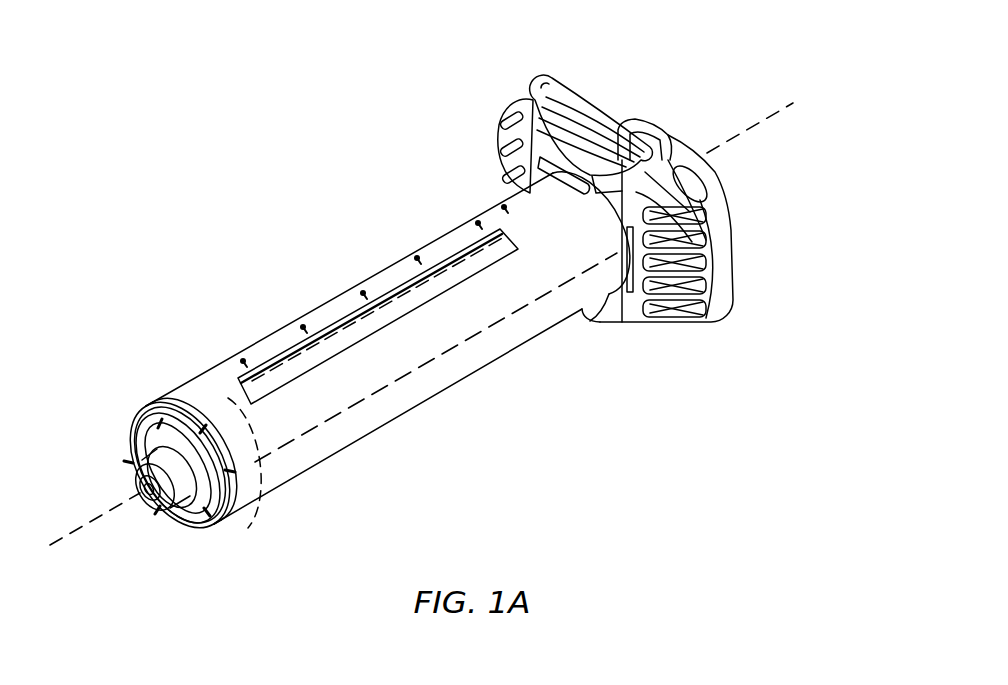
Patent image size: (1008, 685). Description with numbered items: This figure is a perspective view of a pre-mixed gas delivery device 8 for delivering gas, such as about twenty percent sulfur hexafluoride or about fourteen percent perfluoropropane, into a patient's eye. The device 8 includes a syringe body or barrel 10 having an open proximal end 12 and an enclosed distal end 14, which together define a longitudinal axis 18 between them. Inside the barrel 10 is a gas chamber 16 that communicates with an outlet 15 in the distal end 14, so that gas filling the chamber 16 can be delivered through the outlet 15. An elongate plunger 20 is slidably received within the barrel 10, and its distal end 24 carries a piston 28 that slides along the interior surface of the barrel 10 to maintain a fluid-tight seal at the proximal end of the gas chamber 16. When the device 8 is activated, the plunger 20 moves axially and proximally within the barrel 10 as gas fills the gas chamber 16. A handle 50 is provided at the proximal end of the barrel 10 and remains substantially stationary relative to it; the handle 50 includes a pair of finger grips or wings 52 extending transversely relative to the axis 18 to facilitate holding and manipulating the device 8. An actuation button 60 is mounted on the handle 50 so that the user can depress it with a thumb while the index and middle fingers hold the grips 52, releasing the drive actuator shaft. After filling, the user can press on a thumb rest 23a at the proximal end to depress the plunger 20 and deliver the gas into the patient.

The device 8 is at (254, 134).
The barrel 10 is at (484, 374).
The proximal end 12 is at (577, 318).
The distal end 14 is at (240, 513).
The outlet 15 is at (138, 488).
The gas chamber 16 is at (236, 376).
The longitudinal axis 18 is at (104, 519).
The plunger 20 is at (370, 396).
The distal end 24 is at (281, 444).
The piston 28 is at (196, 402).
The handle 50 is at (738, 257).
The finger grips 52 is at (497, 128).
The actuation button 60 is at (594, 108).
The thumb rest 23a is at (673, 150).